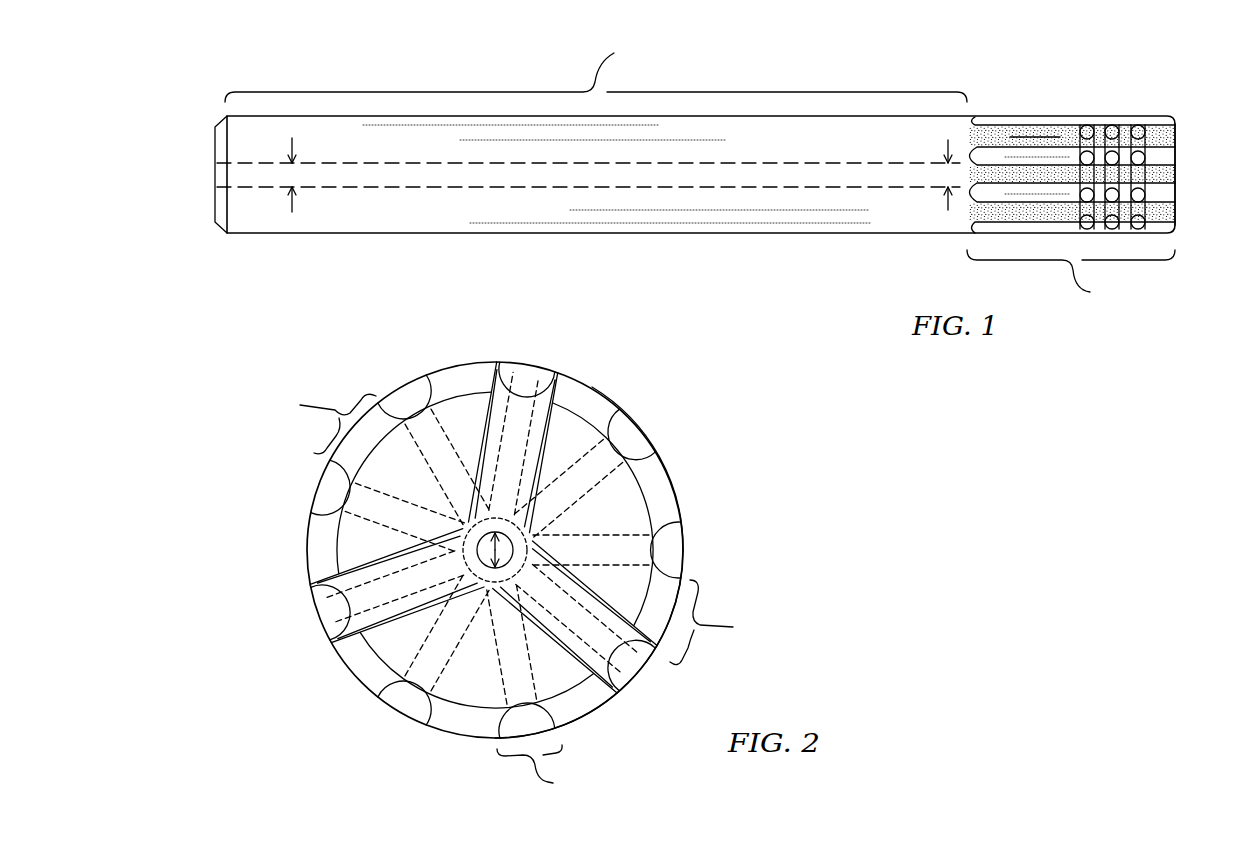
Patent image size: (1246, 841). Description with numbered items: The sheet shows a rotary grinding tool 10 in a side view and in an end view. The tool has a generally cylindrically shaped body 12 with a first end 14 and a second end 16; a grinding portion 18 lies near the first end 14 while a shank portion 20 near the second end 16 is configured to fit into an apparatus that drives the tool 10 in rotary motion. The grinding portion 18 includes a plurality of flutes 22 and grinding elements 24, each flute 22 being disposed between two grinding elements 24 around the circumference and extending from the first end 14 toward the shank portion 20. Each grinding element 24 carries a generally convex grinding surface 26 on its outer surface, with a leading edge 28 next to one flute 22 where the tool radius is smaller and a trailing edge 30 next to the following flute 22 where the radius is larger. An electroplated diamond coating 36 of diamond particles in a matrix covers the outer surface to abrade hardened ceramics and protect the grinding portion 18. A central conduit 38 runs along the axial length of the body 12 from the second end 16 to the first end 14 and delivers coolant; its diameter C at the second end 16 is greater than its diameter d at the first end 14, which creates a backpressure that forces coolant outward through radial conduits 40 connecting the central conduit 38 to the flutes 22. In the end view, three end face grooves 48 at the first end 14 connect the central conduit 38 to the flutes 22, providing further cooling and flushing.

In FIG. 1, the rotary grinding tool 10 is at (293, 75).
In FIG. 2, the rotary grinding tool 10 is at (692, 401).
In FIG. 1, the body 12 is at (775, 233).
In FIG. 2, the body 12 is at (597, 389).
In FIG. 1, the first end 14 is at (1178, 128).
In FIG. 2, the first end 14 is at (342, 673).
In FIG. 1, the second end 16 is at (215, 140).
In FIG. 1, the grinding portion 18 is at (1071, 278).
In FIG. 1, the shank portion 20 is at (596, 71).
In FIG. 1, the flutes 22 is at (1160, 157).
In FIG. 2, the flutes 22 is at (535, 748).
In FIG. 1, the grinding elements 24 is at (1158, 141).
In FIG. 2, the grinding elements 24 is at (514, 529).
In FIG. 1, the grinding surface 26 is at (1060, 137).
In FIG. 2, the grinding surface 26 is at (442, 375).
In FIG. 2, the leading edge 28 is at (650, 446).
In FIG. 2, the trailing edge 30 is at (680, 520).
In FIG. 1, the electroplated diamond coating 36 is at (1010, 135).
In FIG. 1, the central conduit 38 is at (437, 187).
In FIG. 2, the central conduit 38 is at (514, 551).
In FIG. 1, the radial conduits 40 is at (1113, 157).
In FIG. 2, the radial conduits 40 is at (375, 506).
In FIG. 2, the end face grooves 48 is at (518, 413).
In FIG. 1, the central conduit diameter at second end C is at (296, 141).
In FIG. 1, the central conduit diameter at first end d is at (945, 143).
In FIG. 2, the central conduit diameter at first end d is at (472, 562).